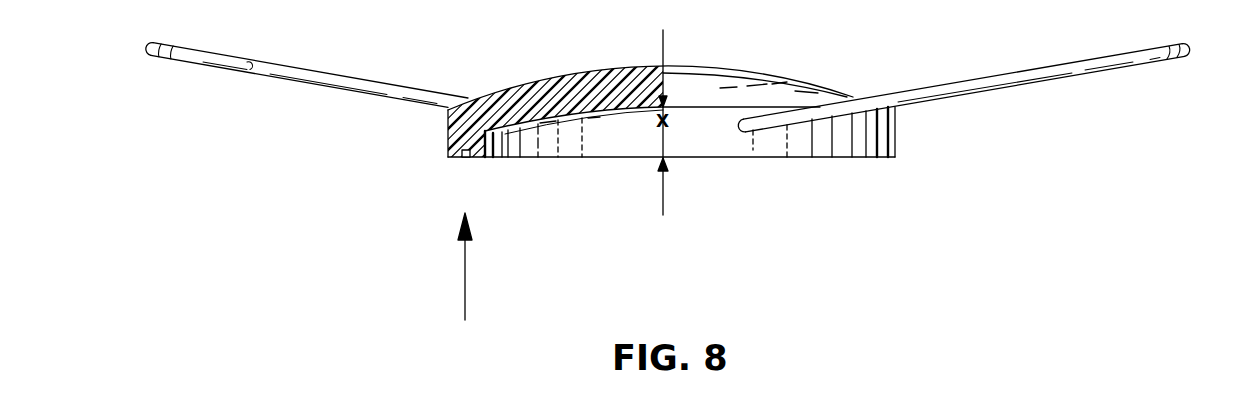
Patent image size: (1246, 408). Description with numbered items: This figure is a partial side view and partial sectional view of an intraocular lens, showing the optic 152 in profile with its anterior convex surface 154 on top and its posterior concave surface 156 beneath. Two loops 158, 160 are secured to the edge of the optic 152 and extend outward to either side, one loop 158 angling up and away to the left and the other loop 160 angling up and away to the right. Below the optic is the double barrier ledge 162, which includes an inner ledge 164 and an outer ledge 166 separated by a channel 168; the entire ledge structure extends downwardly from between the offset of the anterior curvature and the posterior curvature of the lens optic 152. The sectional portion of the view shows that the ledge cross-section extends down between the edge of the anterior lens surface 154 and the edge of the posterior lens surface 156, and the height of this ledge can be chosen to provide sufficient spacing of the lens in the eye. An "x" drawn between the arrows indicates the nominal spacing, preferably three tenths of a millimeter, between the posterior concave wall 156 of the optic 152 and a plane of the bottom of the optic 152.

The optic 152 is at (705, 66).
The anterior convex surface 154 is at (781, 76).
The posterior concave surface 156 is at (612, 115).
The loop 158 is at (182, 61).
The loop 160 is at (1167, 60).
The double barrier ledge 162 is at (469, 279).
The inner ledge 164 is at (475, 158).
The outer ledge 166 is at (456, 158).
The channel 168 is at (466, 158).